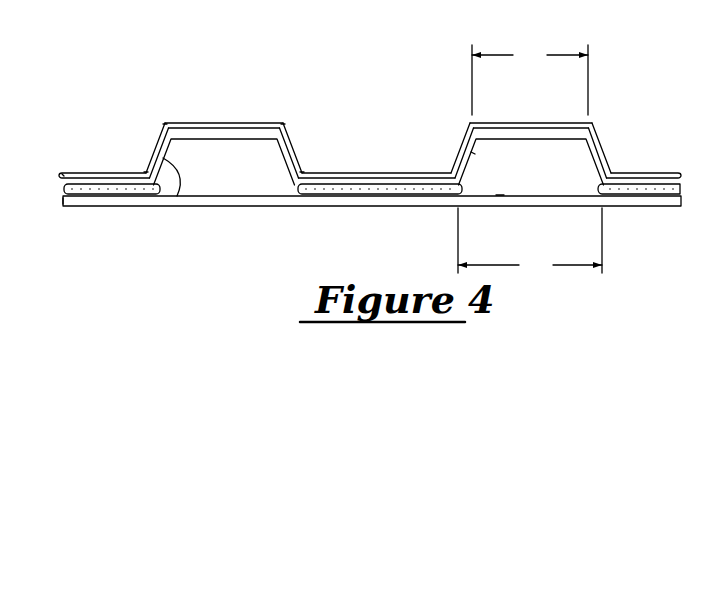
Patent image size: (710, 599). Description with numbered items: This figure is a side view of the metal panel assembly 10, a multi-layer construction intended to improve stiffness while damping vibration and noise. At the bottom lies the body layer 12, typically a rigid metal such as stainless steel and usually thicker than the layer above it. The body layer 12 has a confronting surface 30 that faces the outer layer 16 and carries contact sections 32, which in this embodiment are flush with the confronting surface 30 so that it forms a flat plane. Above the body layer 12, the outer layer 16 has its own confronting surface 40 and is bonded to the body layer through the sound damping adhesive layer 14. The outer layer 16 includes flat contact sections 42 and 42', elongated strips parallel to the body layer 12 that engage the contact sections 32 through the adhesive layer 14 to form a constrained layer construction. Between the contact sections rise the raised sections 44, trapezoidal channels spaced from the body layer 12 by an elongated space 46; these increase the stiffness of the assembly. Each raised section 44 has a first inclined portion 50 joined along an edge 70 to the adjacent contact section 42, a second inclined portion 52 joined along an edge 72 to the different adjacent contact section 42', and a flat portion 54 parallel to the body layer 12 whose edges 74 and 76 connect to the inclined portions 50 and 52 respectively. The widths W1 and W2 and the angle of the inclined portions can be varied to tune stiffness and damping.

The metal panel assembly 10 is at (386, 108).
The body layer 12 is at (220, 207).
The adhesive layer 14 is at (64, 207).
The outer layer 16 is at (65, 175).
The confronting surface 30 is at (500, 195).
The contact sections 32 is at (157, 199).
The confronting surface 40 is at (473, 153).
The contact sections 42 is at (104, 161).
The contact section 42' is at (377, 161).
The raised sections 44 is at (285, 120).
The elongated space 46 is at (272, 183).
The first inclined portion 50 is at (157, 150).
The second inclined portion 52 is at (294, 160).
The flat portion 54 is at (210, 139).
The edge 70 is at (146, 172).
The edge 72 is at (304, 172).
The edge 74 is at (164, 124).
The edge 76 is at (283, 123).
The width W1 is at (530, 80).
The width W2 is at (530, 244).